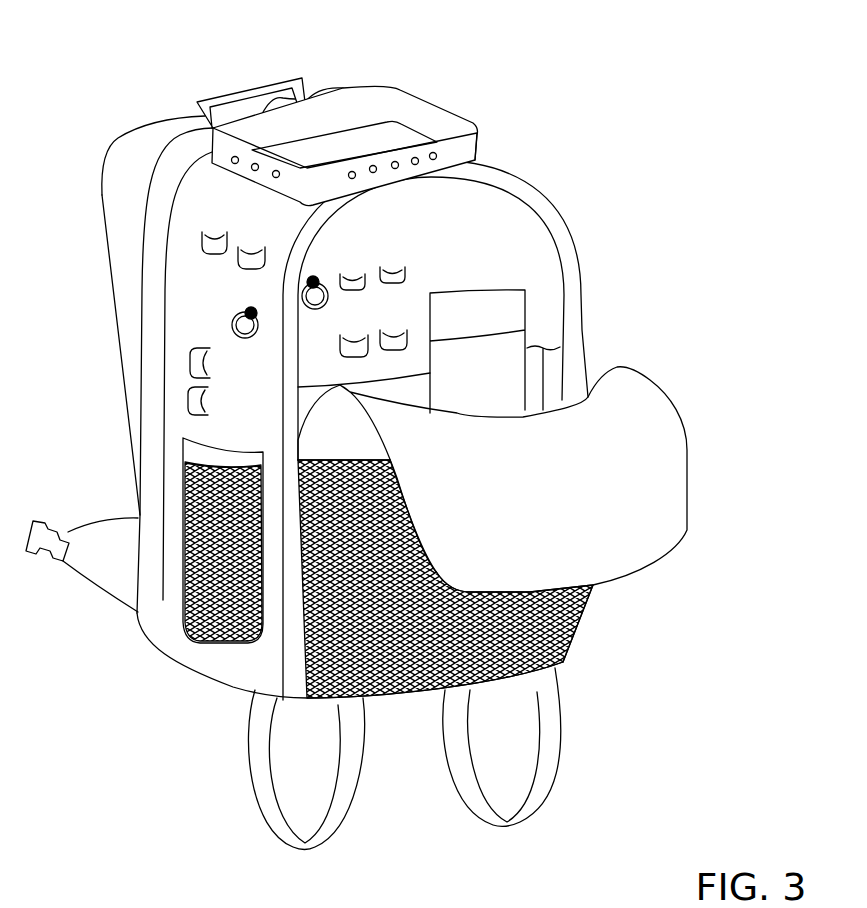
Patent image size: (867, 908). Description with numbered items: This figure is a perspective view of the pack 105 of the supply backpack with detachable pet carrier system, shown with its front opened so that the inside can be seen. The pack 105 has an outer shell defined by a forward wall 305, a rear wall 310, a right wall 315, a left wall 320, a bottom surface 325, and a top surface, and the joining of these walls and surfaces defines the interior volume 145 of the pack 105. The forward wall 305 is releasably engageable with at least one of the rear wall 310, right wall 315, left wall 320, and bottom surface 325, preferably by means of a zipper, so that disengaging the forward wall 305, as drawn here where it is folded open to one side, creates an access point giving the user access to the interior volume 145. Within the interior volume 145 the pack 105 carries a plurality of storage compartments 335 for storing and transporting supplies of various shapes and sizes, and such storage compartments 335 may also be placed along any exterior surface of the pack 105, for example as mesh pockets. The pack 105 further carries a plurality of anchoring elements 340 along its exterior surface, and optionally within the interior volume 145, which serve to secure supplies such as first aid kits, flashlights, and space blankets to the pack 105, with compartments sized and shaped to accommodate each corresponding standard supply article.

The pack 105 is at (526, 100).
The interior volume 145 is at (492, 233).
The forward wall 305 is at (658, 470).
The rear wall 310 is at (140, 231).
The right wall 315 is at (194, 296).
The left wall 320 is at (598, 597).
The bottom surface 325 is at (207, 680).
The storage compartment 335 is at (496, 317).
The anchoring element 340 is at (177, 403).